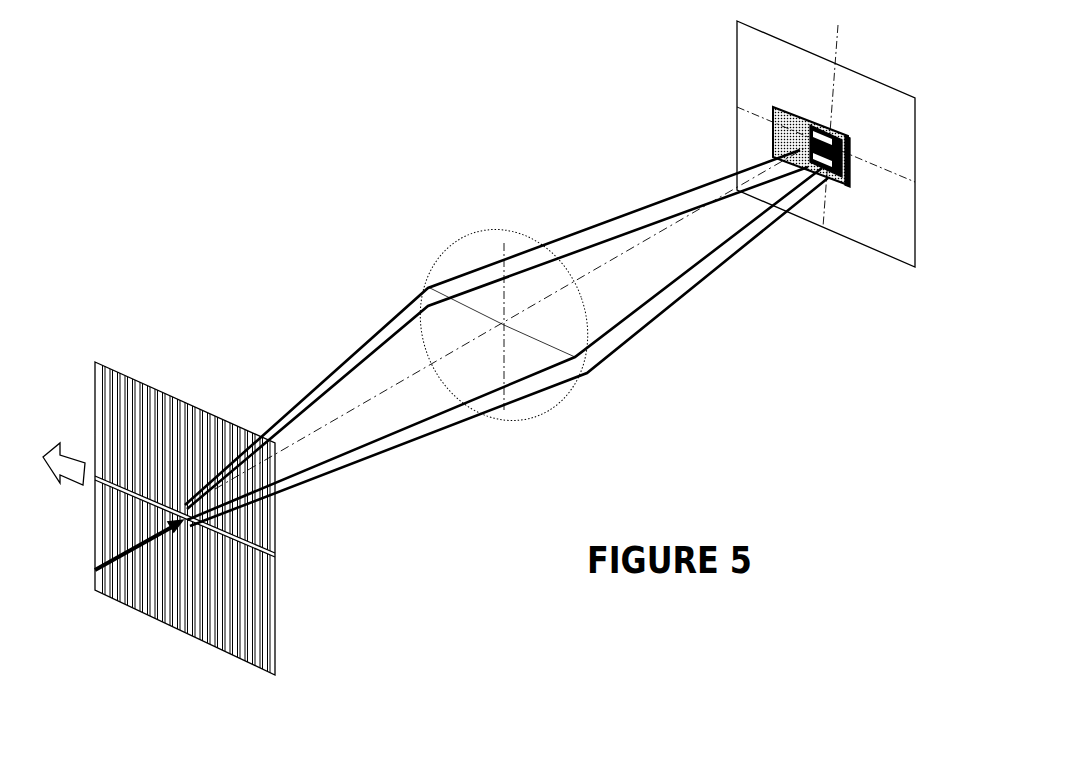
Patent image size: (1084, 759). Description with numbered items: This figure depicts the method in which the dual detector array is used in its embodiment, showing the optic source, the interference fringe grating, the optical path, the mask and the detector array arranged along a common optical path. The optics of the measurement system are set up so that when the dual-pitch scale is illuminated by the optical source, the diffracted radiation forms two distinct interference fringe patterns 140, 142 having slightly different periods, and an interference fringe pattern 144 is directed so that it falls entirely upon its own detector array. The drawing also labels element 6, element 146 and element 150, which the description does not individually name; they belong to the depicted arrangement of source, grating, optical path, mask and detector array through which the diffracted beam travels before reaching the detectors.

The optical axis of detector 6 is at (841, 27).
The interference fringe pattern 140 is at (118, 554).
The interference fringe pattern 142 is at (203, 518).
The interference fringe pattern 144 is at (433, 243).
The detector 146 is at (775, 113).
The diffracted light beams 150 is at (398, 428).